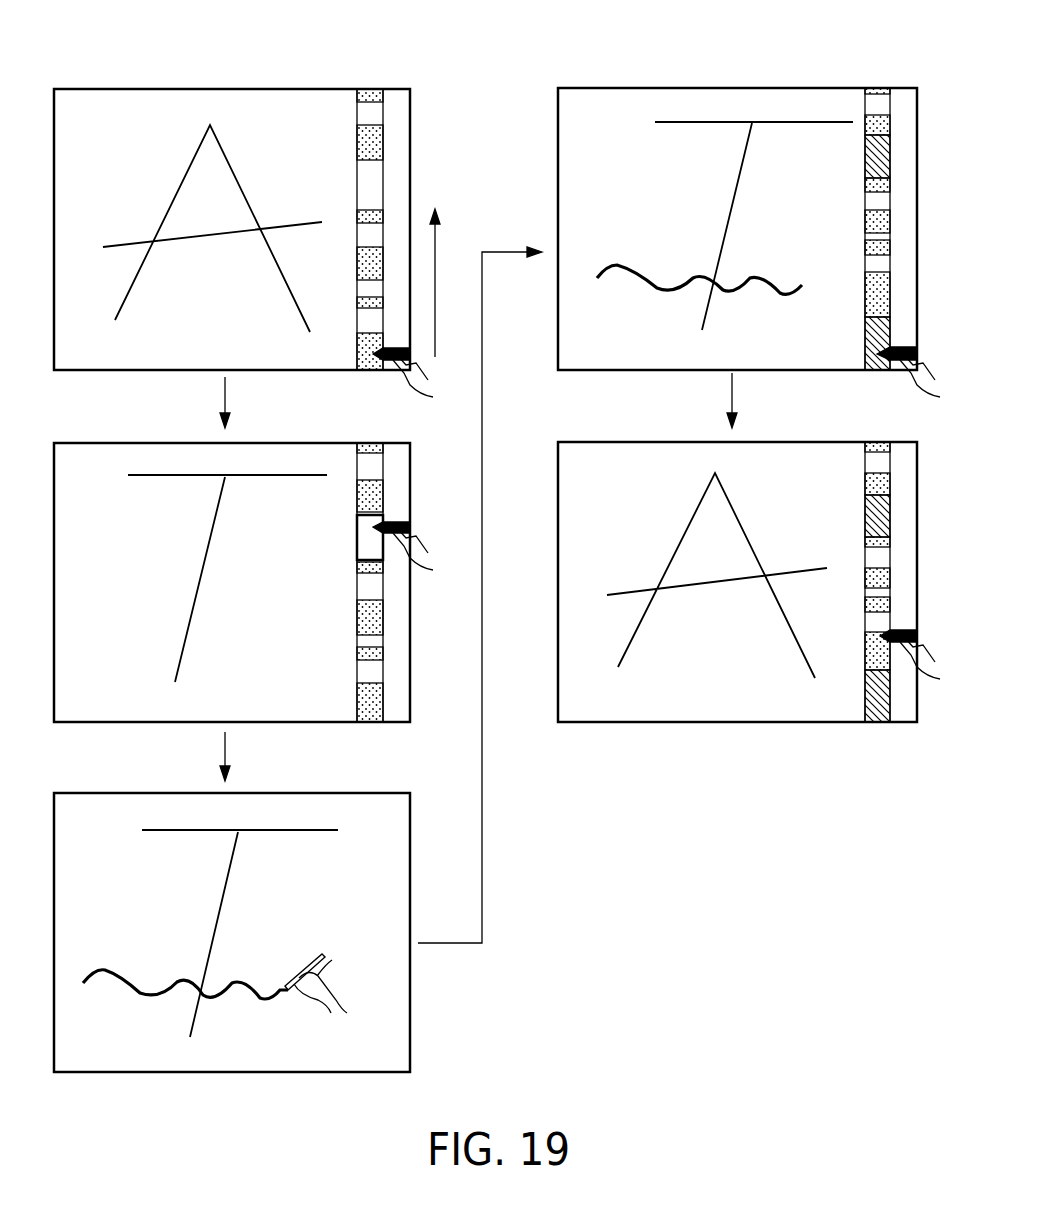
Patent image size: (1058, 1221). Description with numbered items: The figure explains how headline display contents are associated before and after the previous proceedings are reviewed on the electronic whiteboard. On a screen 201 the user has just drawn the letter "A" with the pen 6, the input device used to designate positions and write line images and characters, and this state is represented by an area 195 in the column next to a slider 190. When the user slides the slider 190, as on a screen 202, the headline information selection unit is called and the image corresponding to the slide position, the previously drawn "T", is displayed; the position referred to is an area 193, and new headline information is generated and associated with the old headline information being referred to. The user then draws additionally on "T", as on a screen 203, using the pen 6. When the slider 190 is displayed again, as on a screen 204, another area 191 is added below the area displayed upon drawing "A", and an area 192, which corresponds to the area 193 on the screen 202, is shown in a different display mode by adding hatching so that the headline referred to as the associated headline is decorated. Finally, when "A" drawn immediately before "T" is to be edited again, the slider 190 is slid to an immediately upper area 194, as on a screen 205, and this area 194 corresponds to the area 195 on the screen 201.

The pen 6 is at (318, 957).
The slider 190 is at (375, 372).
The area 191 is at (865, 333).
The area 192 is at (865, 158).
The area 193 is at (357, 548).
The area 194 is at (862, 638).
The area 195 is at (357, 347).
The screen 201 is at (410, 97).
The screen 202 is at (410, 452).
The screen 203 is at (412, 1023).
The screen 204 is at (558, 150).
The screen 205 is at (558, 503).